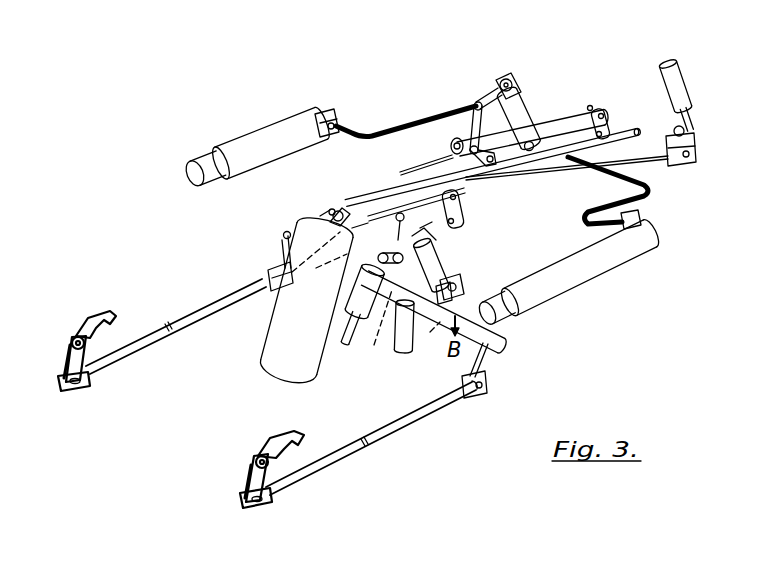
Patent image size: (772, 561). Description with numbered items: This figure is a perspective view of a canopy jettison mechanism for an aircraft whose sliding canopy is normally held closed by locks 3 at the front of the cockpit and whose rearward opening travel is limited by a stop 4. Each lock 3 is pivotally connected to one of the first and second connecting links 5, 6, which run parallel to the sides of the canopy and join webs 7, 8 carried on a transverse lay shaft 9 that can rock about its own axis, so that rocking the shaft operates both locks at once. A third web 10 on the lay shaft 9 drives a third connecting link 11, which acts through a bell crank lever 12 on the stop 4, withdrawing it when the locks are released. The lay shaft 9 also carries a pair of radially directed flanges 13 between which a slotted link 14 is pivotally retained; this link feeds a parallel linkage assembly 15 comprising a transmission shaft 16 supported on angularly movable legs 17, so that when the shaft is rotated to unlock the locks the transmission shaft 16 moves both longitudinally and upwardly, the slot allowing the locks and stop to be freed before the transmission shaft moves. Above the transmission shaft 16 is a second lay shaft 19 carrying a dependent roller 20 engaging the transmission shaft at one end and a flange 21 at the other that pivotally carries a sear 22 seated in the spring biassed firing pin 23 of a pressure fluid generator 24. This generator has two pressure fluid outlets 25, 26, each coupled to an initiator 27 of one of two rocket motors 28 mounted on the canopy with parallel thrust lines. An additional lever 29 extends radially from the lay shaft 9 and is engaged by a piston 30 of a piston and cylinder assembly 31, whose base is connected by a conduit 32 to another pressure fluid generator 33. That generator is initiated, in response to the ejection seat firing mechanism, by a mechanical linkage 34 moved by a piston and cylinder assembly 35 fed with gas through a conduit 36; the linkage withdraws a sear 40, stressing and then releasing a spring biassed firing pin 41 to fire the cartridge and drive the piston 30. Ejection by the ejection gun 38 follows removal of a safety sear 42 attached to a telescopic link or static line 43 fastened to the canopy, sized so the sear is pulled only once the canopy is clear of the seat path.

The lock 3 is at (81, 313).
The stop 4 is at (683, 92).
The first connecting link 5 is at (378, 438).
The second connecting link 6 is at (160, 337).
The web 7 is at (492, 372).
The web 8 is at (283, 263).
The transverse lay shaft 9 is at (286, 234).
The third web 10 is at (452, 299).
The third connecting link 11 is at (500, 262).
The bell crank lever 12 is at (690, 146).
The radially directed flanges 13 is at (358, 226).
The slotted link 14 is at (376, 220).
The parallel linkage assembly 15 is at (593, 105).
The transmission shaft 16 is at (486, 182).
The angularly movable legs 17 is at (459, 206).
The second lay shaft 19 is at (450, 146).
The dependent roller 20 is at (530, 132).
The flange 21 is at (474, 112).
The sear 22 is at (522, 82).
The spring biassed firing pin 23 is at (508, 78).
The pressure fluid generator 24 is at (528, 108).
The pressure fluid outlet 25 is at (648, 192).
The pressure fluid outlet 26 is at (402, 126).
The initiator 27 is at (338, 118).
The rocket motor 28 is at (256, 142).
The additional lever 29 is at (432, 270).
The piston 30 is at (386, 322).
The piston and cylinder assembly 31 is at (404, 352).
The conduit 32 is at (432, 340).
The pressure fluid generator 33 is at (464, 284).
The mechanical linkage 34 is at (438, 254).
The piston and cylinder assembly 35 is at (358, 296).
The conduit 36 is at (350, 328).
The ejection gun 38 is at (280, 328).
The sear 40 is at (423, 232).
The spring biassed firing pin 41 is at (398, 236).
The safety sear 42 is at (334, 213).
The telescopic link or static line 43 is at (622, 138).